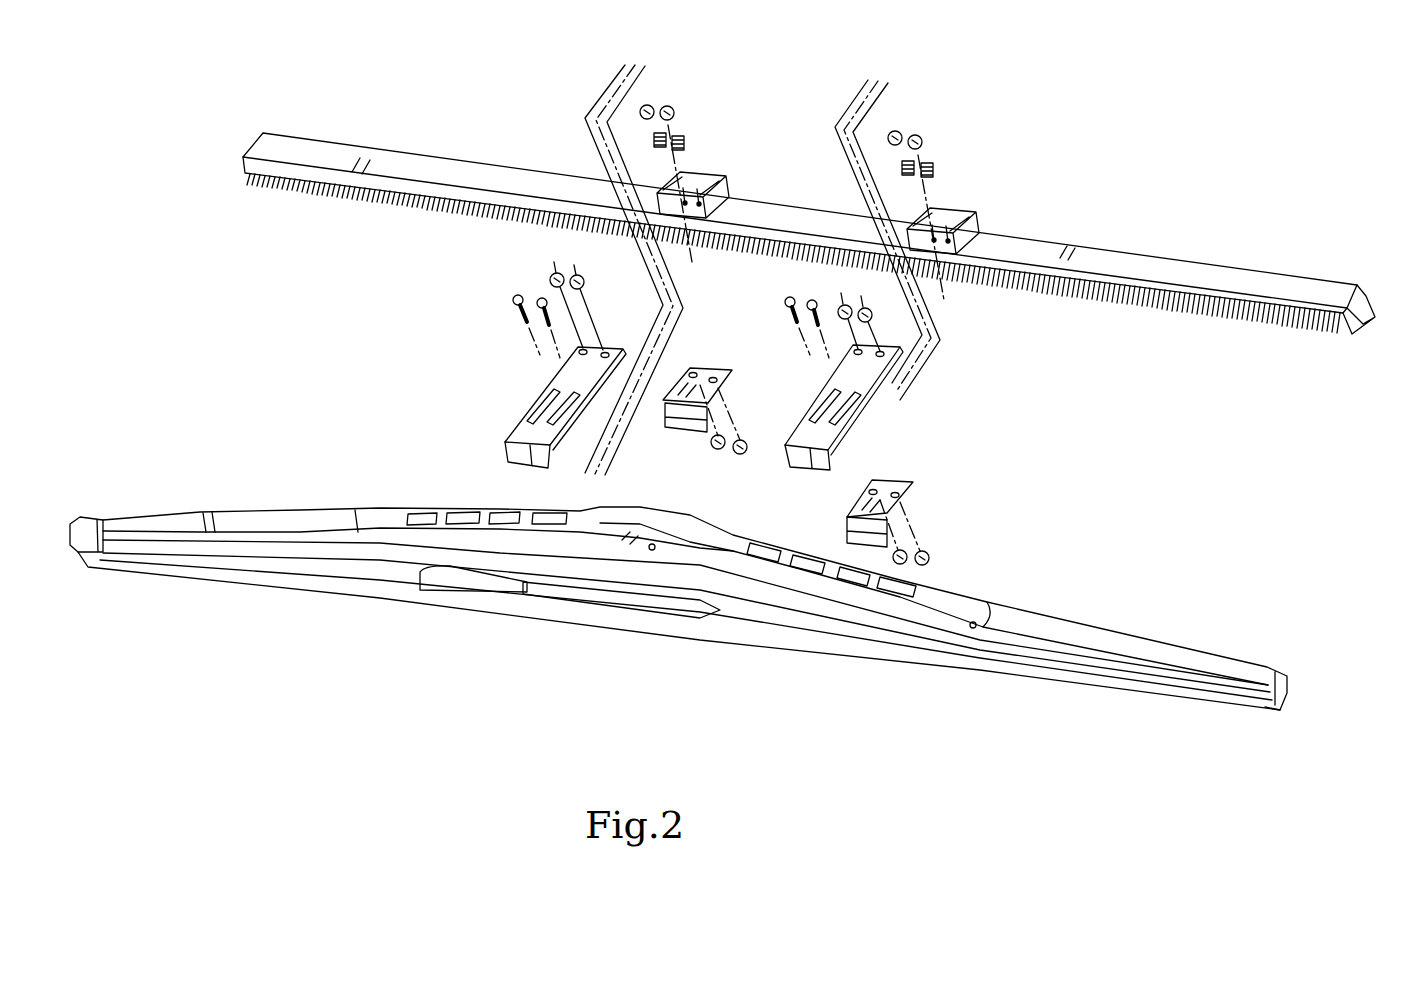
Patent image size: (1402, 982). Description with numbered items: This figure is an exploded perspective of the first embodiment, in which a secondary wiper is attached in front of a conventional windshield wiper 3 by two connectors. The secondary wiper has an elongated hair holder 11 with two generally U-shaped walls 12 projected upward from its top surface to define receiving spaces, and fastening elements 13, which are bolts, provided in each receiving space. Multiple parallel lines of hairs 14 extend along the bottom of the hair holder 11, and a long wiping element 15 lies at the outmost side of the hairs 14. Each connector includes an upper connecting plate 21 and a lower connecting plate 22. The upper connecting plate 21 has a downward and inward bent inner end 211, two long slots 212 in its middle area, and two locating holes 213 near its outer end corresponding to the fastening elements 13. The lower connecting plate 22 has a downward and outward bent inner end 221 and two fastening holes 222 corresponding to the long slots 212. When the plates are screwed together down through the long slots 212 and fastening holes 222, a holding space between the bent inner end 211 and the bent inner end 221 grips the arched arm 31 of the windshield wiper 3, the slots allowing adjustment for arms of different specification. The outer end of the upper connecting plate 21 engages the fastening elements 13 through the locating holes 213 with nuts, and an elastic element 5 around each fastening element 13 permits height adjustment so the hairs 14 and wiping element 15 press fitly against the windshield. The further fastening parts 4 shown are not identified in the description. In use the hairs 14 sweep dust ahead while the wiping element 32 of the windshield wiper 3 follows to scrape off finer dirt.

The windshield wiper 3 is at (678, 588).
The arched arm 31 is at (385, 516).
The wiping element 32 is at (656, 634).
The screws 4 is at (539, 299).
The elastic element 5 is at (681, 137).
The hair holder 11 is at (1117, 262).
The U-shaped walls 12 is at (722, 192).
The fastening elements 13 is at (698, 196).
The hairs 14 is at (1266, 320).
The wiping element 15 is at (1370, 308).
The upper connecting plate 21 is at (692, 386).
The bent inner end 211 is at (510, 460).
The long slots 212 is at (557, 410).
The locating holes 213 is at (722, 310).
The lower connecting plate 22 is at (795, 439).
The bent inner end 221 is at (675, 430).
The fastening holes 222 is at (713, 377).